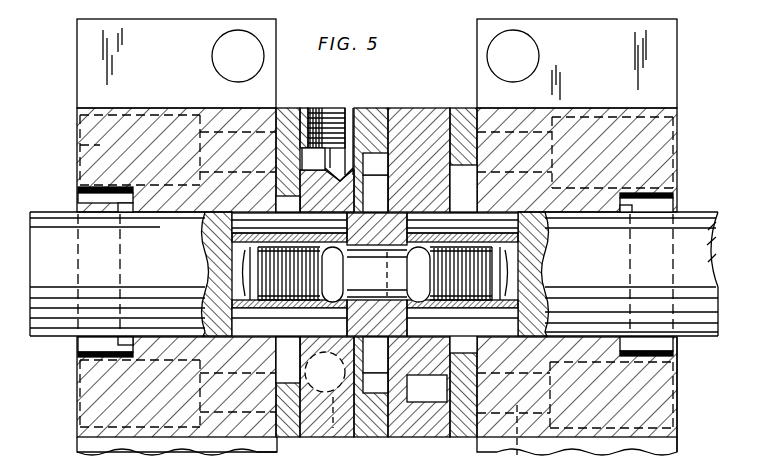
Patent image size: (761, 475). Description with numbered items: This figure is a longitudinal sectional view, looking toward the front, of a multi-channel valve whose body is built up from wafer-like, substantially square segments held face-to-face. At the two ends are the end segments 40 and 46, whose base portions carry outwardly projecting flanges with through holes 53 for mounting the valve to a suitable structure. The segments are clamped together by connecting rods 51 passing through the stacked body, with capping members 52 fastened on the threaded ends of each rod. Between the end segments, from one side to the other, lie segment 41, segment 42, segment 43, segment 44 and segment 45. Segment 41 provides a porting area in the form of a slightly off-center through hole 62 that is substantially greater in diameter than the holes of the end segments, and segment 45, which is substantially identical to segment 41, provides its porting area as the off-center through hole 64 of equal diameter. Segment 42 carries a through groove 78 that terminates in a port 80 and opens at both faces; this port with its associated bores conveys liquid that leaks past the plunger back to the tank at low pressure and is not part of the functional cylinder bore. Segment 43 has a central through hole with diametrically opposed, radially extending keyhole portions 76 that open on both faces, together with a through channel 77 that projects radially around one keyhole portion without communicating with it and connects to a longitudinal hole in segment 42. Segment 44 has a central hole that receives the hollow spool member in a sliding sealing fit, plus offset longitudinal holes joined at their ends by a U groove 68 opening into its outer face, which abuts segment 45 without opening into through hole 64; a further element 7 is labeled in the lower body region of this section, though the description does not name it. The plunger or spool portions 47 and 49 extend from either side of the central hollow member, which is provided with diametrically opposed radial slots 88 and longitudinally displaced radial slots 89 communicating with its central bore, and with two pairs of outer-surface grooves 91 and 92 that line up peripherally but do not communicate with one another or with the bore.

The end segment 40 is at (78, 73).
The end segment 46 is at (671, 56).
The through holes 53 is at (219, 44).
The segment 41 is at (299, 108).
The through hole 62 is at (297, 211).
The port 80 is at (326, 108).
The groove 78 is at (322, 168).
The segment 42 is at (359, 108).
The through channel 77 is at (384, 173).
The segment 43 is at (377, 110).
The segment 44 is at (422, 110).
The U groove 68 is at (436, 396).
The segment 45 is at (461, 112).
The through hole 64 is at (472, 190).
The plunger or spool portion 47 is at (64, 207).
The plunger or spool portion 49 is at (704, 210).
The grooves 92 is at (330, 330).
The grooves 91 is at (504, 331).
The radial slots 89 is at (340, 284).
The radial slots 88 is at (426, 284).
The bolt hole 7 is at (322, 439).
The keyhole portions 76 is at (205, 462).
The connecting rods 51 is at (519, 455).
The capping members 52 is at (678, 378).